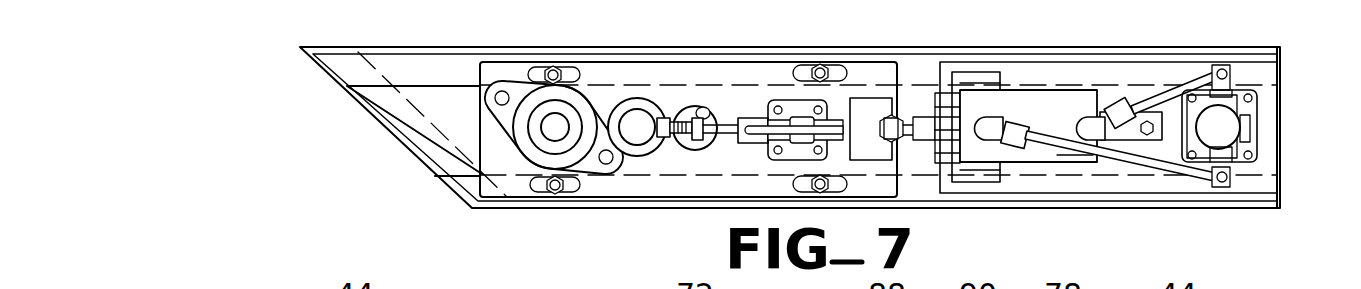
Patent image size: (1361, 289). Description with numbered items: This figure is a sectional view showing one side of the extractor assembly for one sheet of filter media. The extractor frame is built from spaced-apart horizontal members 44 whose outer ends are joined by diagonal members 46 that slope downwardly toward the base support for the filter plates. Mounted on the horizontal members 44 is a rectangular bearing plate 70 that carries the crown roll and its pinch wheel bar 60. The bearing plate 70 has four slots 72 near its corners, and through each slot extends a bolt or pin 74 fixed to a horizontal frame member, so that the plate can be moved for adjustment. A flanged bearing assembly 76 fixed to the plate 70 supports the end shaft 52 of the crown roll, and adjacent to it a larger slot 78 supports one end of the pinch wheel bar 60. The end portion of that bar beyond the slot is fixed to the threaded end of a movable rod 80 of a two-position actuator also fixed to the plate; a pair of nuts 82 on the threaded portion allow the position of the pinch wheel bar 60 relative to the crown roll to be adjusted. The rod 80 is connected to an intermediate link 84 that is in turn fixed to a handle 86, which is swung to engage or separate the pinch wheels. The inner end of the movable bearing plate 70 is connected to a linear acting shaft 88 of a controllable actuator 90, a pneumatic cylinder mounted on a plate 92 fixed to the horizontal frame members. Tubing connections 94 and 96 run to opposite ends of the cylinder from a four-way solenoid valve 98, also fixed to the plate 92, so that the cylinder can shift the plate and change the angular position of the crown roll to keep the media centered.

The horizontal members 44 is at (390, 63).
The diagonal members 46 is at (413, 132).
The end shaft 52 is at (553, 130).
The pinch wheel bar 60 is at (638, 137).
The bearing plate 70 is at (685, 73).
The slots 72 is at (533, 70).
The bolt or pin 74 is at (553, 67).
The flanged bearing assembly 76 is at (582, 90).
The larger slot 78 is at (700, 107).
The movable rod 80 is at (683, 143).
The nuts 82 is at (693, 117).
The intermediate link 84 is at (767, 112).
The handle 86 is at (757, 130).
The linear acting shaft 88 is at (910, 117).
The controllable actuator 90 is at (1038, 100).
The plate 92 is at (1263, 72).
The tubing connection 94 is at (1148, 160).
The tubing connection 96 is at (1163, 97).
The four-way solenoid valve 98 is at (1258, 147).